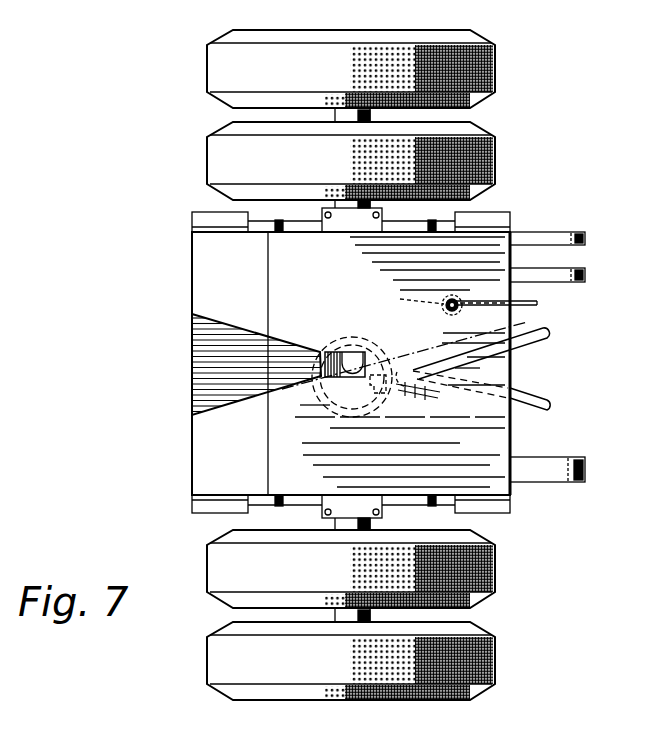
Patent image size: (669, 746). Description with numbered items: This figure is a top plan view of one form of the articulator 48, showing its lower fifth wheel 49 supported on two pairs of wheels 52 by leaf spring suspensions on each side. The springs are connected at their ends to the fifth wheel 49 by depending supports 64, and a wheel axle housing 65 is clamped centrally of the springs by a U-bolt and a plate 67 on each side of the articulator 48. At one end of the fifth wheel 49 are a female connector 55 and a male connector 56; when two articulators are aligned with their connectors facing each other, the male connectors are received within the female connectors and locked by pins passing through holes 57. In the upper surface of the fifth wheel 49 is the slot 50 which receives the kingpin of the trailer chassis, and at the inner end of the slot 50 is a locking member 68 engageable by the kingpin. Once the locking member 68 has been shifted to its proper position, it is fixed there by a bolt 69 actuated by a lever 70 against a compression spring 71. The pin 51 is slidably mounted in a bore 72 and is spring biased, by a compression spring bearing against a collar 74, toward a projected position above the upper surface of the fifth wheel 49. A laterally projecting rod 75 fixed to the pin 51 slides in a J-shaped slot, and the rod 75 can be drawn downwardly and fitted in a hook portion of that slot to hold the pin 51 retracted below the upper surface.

The articulator 48 is at (142, 360).
The fifth wheel 49 is at (351, 363).
The slot 50 is at (194, 410).
The pin 51 is at (456, 298).
The wheels 52 is at (351, 365).
The female connector 55 is at (586, 244).
The male connector 56 is at (586, 476).
The holes 57 is at (578, 232).
The depending supports 64 is at (510, 212).
The wheel axle housing 65 is at (376, 523).
The plate 67 is at (352, 363).
The locking member 68 is at (325, 364).
The bolt 69 is at (384, 395).
The lever 70 is at (546, 404).
The compression spring 71 is at (420, 402).
The bore 72 is at (444, 311).
The collar 74 is at (422, 299).
The laterally projecting rod 75 is at (509, 301).